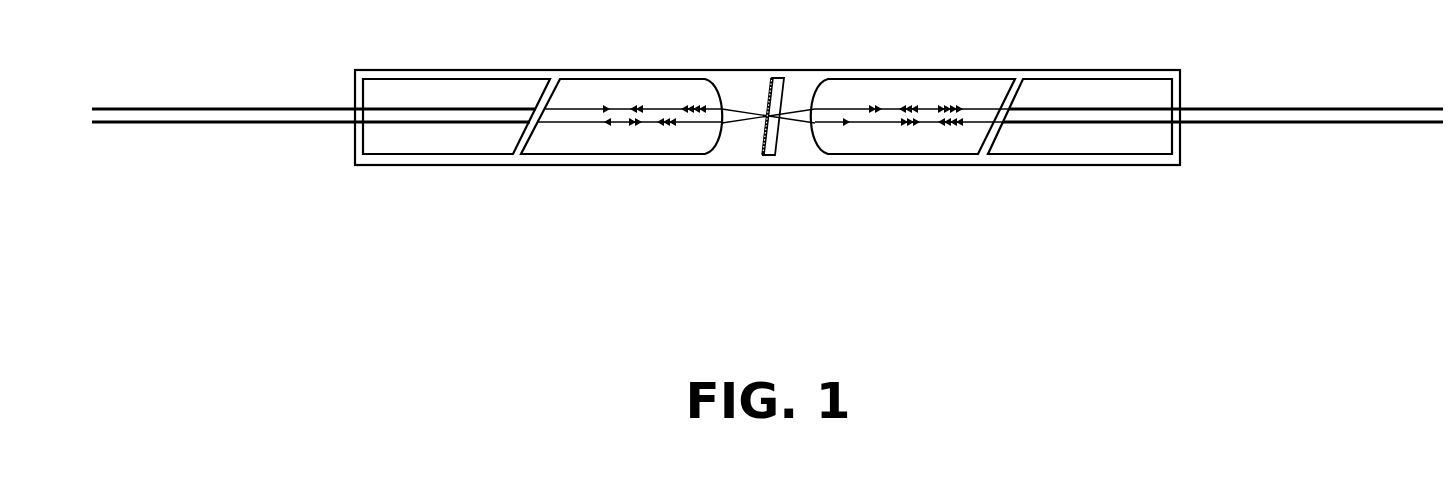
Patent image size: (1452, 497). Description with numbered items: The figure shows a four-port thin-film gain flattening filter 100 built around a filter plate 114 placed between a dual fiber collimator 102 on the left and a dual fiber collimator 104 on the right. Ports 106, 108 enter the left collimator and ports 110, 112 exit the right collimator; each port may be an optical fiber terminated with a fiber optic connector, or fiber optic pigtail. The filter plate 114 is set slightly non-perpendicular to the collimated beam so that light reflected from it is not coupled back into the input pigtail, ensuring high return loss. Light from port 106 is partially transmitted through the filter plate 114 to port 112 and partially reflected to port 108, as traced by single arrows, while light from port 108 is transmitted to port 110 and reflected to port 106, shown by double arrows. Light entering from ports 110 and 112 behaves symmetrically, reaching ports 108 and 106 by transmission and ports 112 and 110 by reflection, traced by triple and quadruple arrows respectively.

The 4-port thin-film gain flattening filter 100 is at (795, 358).
The dual fiber collimator 102 is at (468, 79).
The dual fiber collimator 104 is at (923, 79).
The port 106 is at (314, 99).
The port 108 is at (311, 135).
The port 110 is at (1226, 100).
The port 112 is at (1223, 136).
The filter plate 114 is at (782, 78).